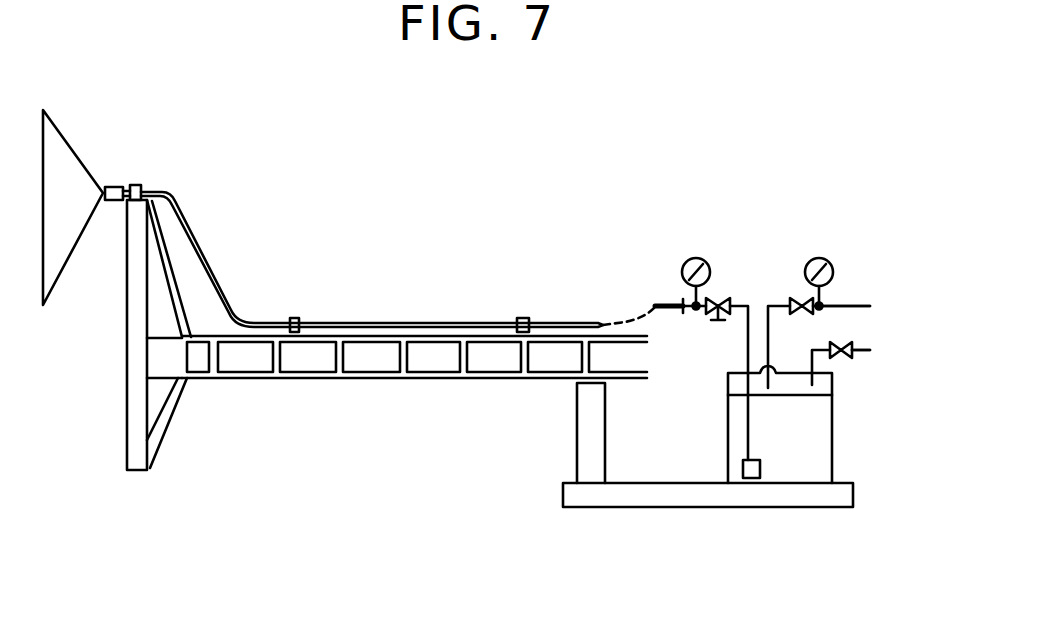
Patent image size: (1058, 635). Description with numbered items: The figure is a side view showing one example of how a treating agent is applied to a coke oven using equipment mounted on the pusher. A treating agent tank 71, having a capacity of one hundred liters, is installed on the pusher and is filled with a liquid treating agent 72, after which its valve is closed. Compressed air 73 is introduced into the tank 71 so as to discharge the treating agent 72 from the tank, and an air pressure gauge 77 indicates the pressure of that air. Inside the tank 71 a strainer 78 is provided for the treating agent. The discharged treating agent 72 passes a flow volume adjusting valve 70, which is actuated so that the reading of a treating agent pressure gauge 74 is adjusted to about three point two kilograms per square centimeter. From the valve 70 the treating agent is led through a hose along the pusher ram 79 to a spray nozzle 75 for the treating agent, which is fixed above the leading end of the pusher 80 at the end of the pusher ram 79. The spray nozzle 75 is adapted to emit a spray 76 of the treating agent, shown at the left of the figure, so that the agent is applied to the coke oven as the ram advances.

The flow volume adjusting valve 70 is at (727, 296).
The treating agent tank 71 is at (793, 475).
The liquid treating agent 72 is at (873, 353).
The compressed air 73 is at (869, 306).
The treating agent pressure gauge 74 is at (687, 262).
The spray nozzle 75 is at (113, 187).
The spray 76 is at (65, 157).
The air pressure gauge 77 is at (818, 258).
The strainer 78 is at (747, 480).
The pusher ram 79 is at (323, 378).
The leading end of the pusher 80 is at (138, 470).